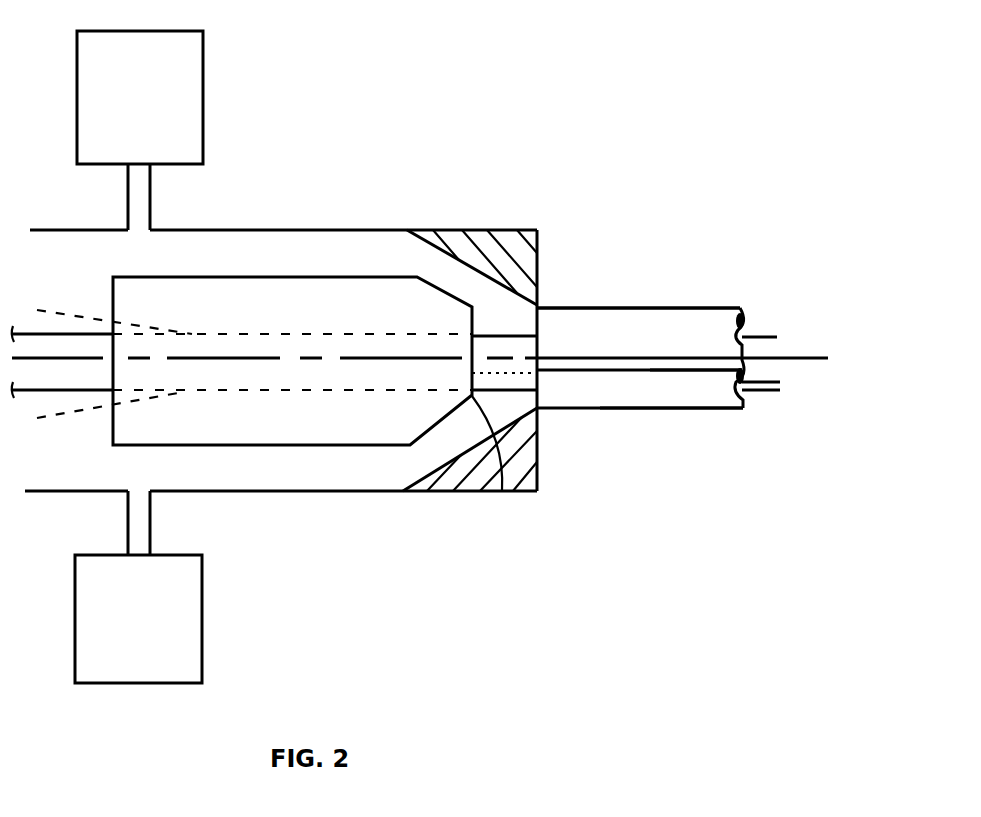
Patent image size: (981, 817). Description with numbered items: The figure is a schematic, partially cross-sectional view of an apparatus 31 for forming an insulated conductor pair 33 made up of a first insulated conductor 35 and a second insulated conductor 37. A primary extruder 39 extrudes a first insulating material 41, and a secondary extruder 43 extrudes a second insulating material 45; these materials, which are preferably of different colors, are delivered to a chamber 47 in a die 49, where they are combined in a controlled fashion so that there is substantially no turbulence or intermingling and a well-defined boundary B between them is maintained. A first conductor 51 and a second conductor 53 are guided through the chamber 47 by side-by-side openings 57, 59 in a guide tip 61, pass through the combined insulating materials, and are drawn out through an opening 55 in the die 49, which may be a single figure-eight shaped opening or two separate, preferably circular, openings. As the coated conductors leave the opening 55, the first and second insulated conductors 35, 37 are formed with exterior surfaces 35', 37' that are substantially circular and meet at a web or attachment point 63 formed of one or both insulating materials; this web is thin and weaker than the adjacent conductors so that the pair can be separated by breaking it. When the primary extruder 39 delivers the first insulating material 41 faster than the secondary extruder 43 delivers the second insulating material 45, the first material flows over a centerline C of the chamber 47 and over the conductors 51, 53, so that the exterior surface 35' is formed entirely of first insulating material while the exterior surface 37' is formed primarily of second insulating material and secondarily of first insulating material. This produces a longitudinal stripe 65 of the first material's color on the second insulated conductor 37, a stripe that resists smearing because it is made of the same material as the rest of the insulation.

The apparatus 31 is at (381, 110).
The insulated conductor pair 33 is at (661, 300).
The first insulated conductor 35 is at (638, 280).
The exterior surface of first insulated conductor 35' is at (678, 333).
The second insulated conductor 37 is at (640, 423).
The exterior surface of second insulated conductor 37' is at (671, 432).
The primary extruder 39 is at (203, 72).
The first insulating material 41 is at (378, 247).
The secondary extruder 43 is at (202, 642).
The second insulating material 45 is at (383, 477).
The chamber 47 is at (329, 252).
The die 49 is at (487, 228).
The first conductor 51 is at (33, 333).
The second conductor 53 is at (33, 393).
The opening 55 is at (537, 384).
The opening in guide tip for first conductor 57 is at (472, 336).
The opening in guide tip for second conductor 59 is at (502, 491).
The guide tip 61 is at (309, 452).
The web or attachment point 63 is at (688, 357).
The longitudinal stripe 65 is at (723, 370).
The boundary B is at (518, 376).
The centerline C is at (570, 355).